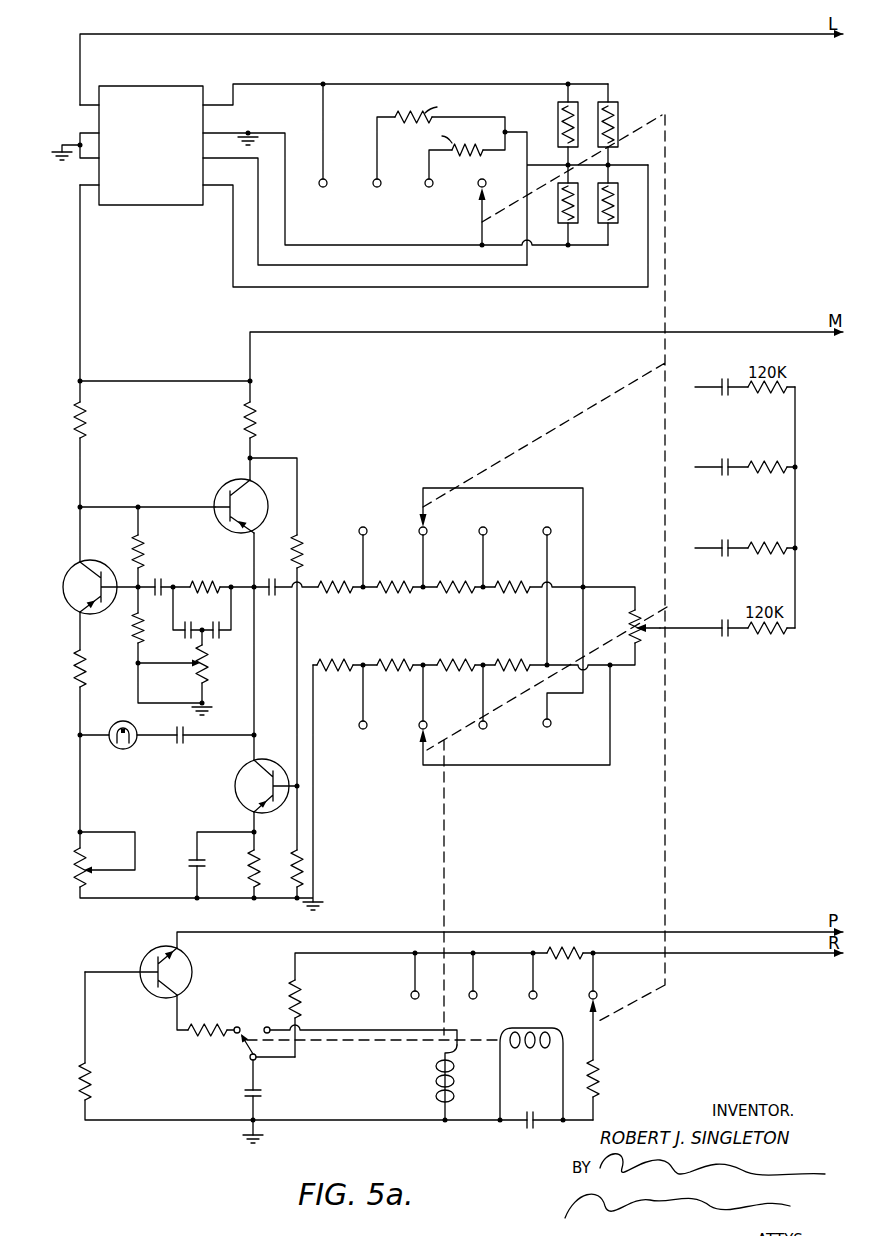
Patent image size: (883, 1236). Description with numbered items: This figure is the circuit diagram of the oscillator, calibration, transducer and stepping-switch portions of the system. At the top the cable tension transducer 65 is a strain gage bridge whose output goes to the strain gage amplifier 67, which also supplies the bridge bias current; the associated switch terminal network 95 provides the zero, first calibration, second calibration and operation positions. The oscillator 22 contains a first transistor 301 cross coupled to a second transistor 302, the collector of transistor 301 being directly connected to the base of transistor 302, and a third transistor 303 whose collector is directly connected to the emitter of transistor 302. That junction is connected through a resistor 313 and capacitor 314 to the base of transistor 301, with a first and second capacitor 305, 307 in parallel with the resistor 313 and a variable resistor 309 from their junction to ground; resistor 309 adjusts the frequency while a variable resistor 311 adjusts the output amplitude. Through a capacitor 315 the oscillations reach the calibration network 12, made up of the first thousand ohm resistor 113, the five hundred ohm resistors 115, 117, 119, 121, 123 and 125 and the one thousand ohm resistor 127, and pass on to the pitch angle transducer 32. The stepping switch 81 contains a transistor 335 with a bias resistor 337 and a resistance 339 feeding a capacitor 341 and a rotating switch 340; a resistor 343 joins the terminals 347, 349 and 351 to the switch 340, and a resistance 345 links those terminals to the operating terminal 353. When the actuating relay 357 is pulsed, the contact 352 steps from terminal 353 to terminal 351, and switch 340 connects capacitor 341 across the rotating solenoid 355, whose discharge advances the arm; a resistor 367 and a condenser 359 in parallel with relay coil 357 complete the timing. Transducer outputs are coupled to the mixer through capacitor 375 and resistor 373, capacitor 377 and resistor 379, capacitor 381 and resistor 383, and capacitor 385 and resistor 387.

The cable tension transducer 65 is at (587, 112).
The strain gage amplifier 67 is at (350, 185).
The switch terminal network 95 is at (483, 159).
The oscillator 22 is at (179, 547).
The calibration network 12 is at (487, 626).
The pitch angle transducer 32 is at (638, 652).
The stepping switch 81 is at (369, 1045).
The first transistor 301 is at (71, 611).
The second transistor 302 is at (220, 499).
The third transistor 303 is at (237, 803).
The first capacitor 305 is at (186, 640).
The second capacitor 307 is at (218, 641).
The variable resistor 309 is at (198, 679).
The variable resistor 311 is at (108, 832).
The resistor 313 is at (209, 582).
The capacitor 314 is at (161, 582).
The capacitor 315 is at (284, 598).
The first thousand ohm resistor 113 is at (345, 590).
The 500 ohm resistor 115 is at (393, 590).
The 500 ohm resistor 117 is at (452, 590).
The 500 ohm resistor 119 is at (525, 591).
The 500 ohm resistor 121 is at (520, 668).
The 500 ohm resistor 123 is at (460, 668).
The 500 ohm resistor 125 is at (400, 668).
The 1,000 ohm resistor 127 is at (352, 668).
The transistor 335 is at (193, 968).
The bias resistor 337 is at (95, 1086).
The resistance 339 is at (203, 1040).
The rotating switch 340 is at (243, 1050).
The capacitor 341 is at (260, 1097).
The resistor 343 is at (300, 1008).
The resistance 345 is at (590, 951).
The terminal 347 is at (411, 991).
The terminal 349 is at (477, 992).
The terminal 351 is at (536, 992).
The contact 352 is at (598, 1040).
The terminal 353 is at (599, 993).
The rotating solenoid 355 is at (437, 1086).
The actuating relay 357 is at (515, 1048).
The condenser 359 is at (528, 1130).
The resistor 367 is at (600, 1094).
The resistor 373 is at (758, 636).
The capacitor 375 is at (718, 620).
The capacitor 377 is at (720, 541).
The resistor 379 is at (758, 555).
The capacitor 381 is at (720, 458).
The resistor 383 is at (758, 474).
The capacitor 385 is at (720, 381).
The resistor 387 is at (758, 394).